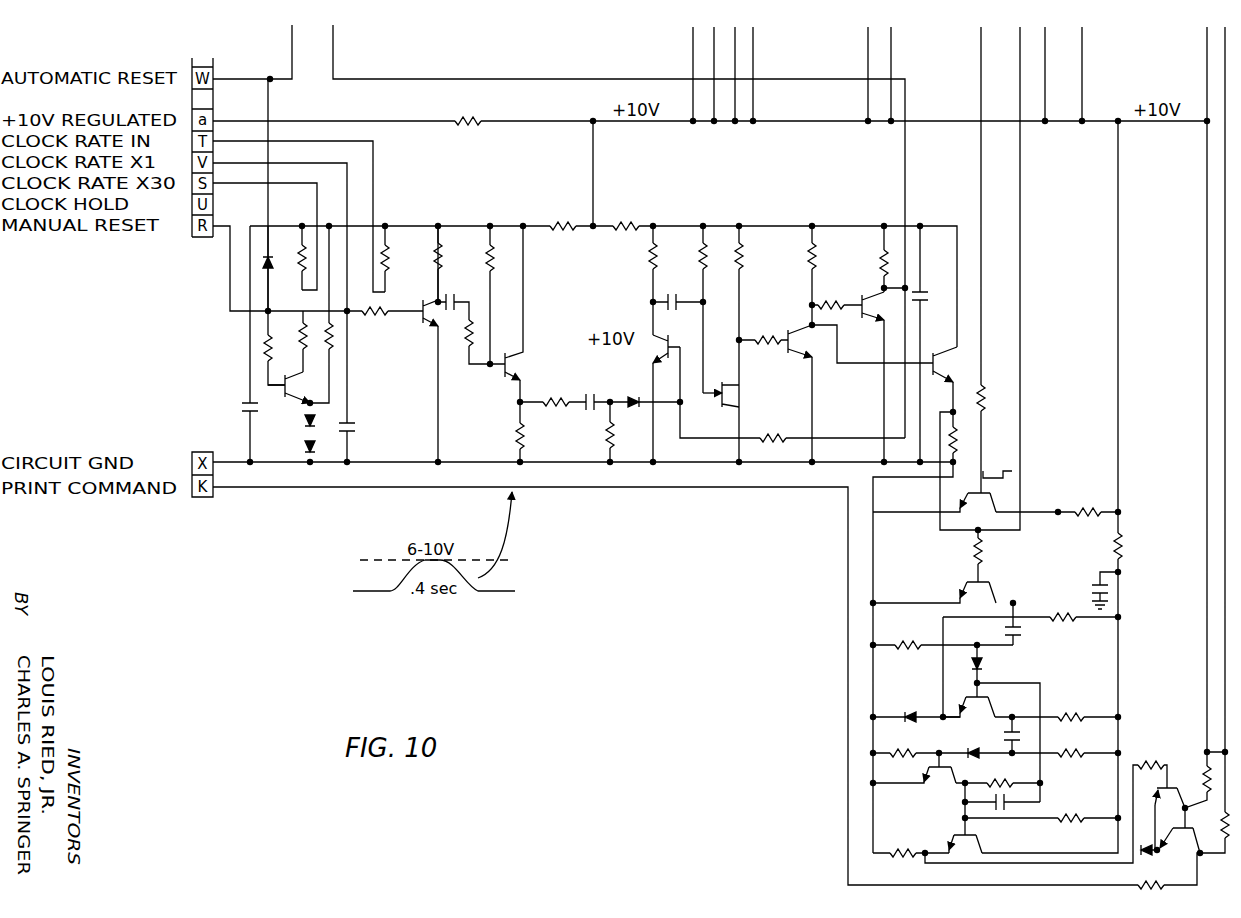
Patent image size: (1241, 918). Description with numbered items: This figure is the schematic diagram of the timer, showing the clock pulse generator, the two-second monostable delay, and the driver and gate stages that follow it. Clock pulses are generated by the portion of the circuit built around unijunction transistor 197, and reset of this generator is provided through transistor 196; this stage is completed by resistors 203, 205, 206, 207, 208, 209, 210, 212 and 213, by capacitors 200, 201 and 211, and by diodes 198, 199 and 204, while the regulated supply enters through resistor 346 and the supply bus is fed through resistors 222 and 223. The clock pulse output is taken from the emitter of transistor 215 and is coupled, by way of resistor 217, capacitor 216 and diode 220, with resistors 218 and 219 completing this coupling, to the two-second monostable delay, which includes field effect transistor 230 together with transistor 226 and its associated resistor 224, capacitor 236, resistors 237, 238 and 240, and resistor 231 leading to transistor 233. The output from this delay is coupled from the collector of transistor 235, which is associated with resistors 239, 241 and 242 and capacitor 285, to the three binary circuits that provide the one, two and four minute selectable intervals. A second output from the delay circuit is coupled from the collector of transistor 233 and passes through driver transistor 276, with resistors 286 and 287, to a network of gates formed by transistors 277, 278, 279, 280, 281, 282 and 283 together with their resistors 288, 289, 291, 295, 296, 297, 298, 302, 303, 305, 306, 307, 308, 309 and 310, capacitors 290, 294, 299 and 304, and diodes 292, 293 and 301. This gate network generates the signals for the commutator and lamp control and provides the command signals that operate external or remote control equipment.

The transistor 196 is at (285, 398).
The unijunction transistor 197 is at (414, 322).
The diode 198 is at (297, 433).
The diode 199 is at (322, 450).
The capacitor 200 is at (382, 420).
The capacitor 201 is at (252, 411).
The resistor 203 is at (312, 347).
The diode 204 is at (261, 258).
The resistor 205 is at (412, 296).
The resistor 206 is at (300, 252).
The resistor 207 is at (393, 256).
The resistor 208 is at (334, 347).
The resistor 209 is at (274, 337).
The resistor 210 is at (448, 256).
The capacitor 211 is at (455, 300).
The resistor 212 is at (465, 343).
The resistor 213 is at (498, 256).
The transistor 215 is at (512, 390).
The resistor 216 is at (552, 404).
The capacitor 217 is at (592, 395).
The resistor 218 is at (516, 425).
The resistor 219 is at (641, 432).
The diode 220 is at (646, 391).
The resistor 222 is at (567, 226).
The resistor 223 is at (632, 226).
The resistor 224 is at (645, 270).
The transistor 226 is at (692, 333).
The field effect transistor 230 is at (738, 400).
The resistor 231 is at (770, 337).
The transistor 233 is at (810, 340).
The transistor 235 is at (868, 320).
The capacitor 236 is at (670, 298).
The resistor 237 is at (700, 262).
The resistor 238 is at (770, 262).
The resistor 239 is at (836, 261).
The resistor 240 is at (786, 425).
The resistor 241 is at (840, 298).
The resistor 242 is at (877, 250).
The driver transistor 276 is at (948, 367).
The transistor 277 is at (995, 503).
The transistor 278 is at (1020, 584).
The transistor 279 is at (1004, 704).
The transistor 280 is at (938, 779).
The transistor 281 is at (997, 823).
The transistor 282 is at (1182, 764).
The transistor 283 is at (1173, 835).
The capacitor 285 is at (928, 300).
The resistor 286 is at (963, 438).
The resistor 287 is at (988, 402).
The resistor 288 is at (1095, 500).
The resistor 289 is at (1000, 551).
The capacitor 290 is at (1046, 622).
The resistor 291 is at (924, 652).
The diode 292 is at (984, 674).
The diode 293 is at (925, 716).
The capacitor 294 is at (1003, 741).
The resistor 295 is at (1078, 622).
The resistor 296 is at (1104, 711).
The resistor 297 is at (1096, 746).
The resistor 298 is at (1125, 547).
The capacitor 299 is at (1107, 591).
The diode 301 is at (990, 766).
The resistor 302 is at (927, 747).
The resistor 303 is at (1013, 780).
The capacitor 304 is at (1012, 809).
The resistor 305 is at (921, 843).
The resistor 306 is at (1147, 870).
The resistor 307 is at (1056, 829).
The resistor 308 is at (1141, 760).
The resistor 309 is at (1209, 748).
The resistor 310 is at (1218, 835).
The resistor 346 is at (467, 115).